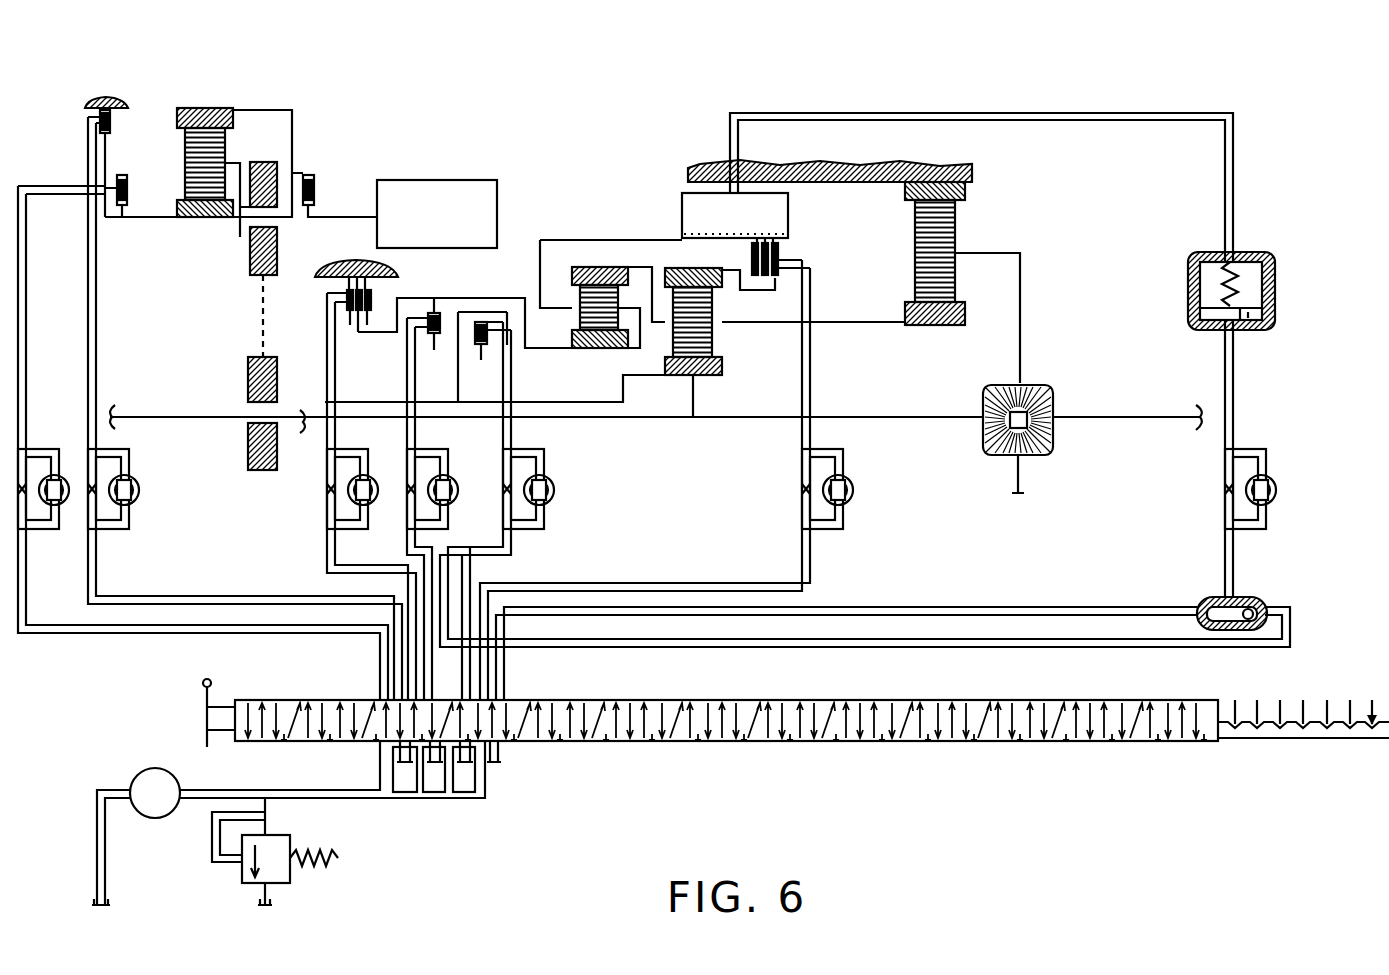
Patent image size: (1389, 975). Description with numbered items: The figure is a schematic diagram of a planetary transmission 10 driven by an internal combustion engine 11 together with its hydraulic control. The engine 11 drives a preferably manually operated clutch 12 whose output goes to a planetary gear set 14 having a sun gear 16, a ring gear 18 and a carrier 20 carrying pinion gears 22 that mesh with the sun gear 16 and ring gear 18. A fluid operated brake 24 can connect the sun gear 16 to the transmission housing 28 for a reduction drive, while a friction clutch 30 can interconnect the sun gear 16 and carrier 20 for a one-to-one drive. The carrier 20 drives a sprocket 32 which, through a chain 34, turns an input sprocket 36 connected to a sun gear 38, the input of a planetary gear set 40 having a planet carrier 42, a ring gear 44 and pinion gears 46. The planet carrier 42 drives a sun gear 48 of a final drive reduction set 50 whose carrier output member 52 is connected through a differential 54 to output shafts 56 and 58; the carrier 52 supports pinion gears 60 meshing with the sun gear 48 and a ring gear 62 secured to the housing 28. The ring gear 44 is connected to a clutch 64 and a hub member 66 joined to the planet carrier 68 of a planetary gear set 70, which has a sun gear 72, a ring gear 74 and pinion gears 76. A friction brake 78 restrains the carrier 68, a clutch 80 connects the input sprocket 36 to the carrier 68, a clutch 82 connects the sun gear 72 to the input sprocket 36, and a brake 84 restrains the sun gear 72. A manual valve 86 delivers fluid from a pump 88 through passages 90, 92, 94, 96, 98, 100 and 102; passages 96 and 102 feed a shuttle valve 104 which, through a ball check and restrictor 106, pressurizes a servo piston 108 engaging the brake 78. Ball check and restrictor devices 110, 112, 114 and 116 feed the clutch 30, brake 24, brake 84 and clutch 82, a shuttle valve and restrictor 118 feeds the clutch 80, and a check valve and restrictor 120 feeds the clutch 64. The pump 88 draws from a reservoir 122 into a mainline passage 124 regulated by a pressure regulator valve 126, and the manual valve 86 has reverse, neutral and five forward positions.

The planetary transmission 10 is at (530, 170).
The internal combustion engine 11 is at (438, 180).
The clutch 12 is at (315, 190).
The planetary gear set 14 is at (243, 97).
The sun gear 16 is at (200, 217).
The ring gear 18 is at (200, 108).
The carrier 20 is at (240, 228).
The pinion gears 22 is at (186, 165).
The brake 24 is at (112, 122).
The transmission housing 28 is at (92, 97).
The friction clutch 30 is at (128, 185).
The sprocket 32 is at (280, 246).
The chain 34 is at (260, 318).
The input sprocket 36 is at (248, 447).
The sun gear 38 is at (708, 390).
The planetary gear set 40 is at (724, 343).
The planet carrier 42 is at (745, 325).
The ring gear 44 is at (682, 270).
The pinion gears 46 is at (700, 377).
The sun gear 48 is at (942, 325).
The final drive reduction set 50 is at (1005, 220).
The carrier output member 52 is at (995, 253).
The differential 54 is at (992, 458).
The output shaft 56 is at (870, 418).
The output shaft 58 is at (1105, 418).
The pinion gears 60 is at (915, 270).
The ring gear 62 is at (965, 198).
The clutch 64 is at (780, 252).
The hub member 66 is at (556, 240).
The planet carrier 68 is at (548, 298).
The planetary gear set 70 is at (603, 262).
The sun gear 72 is at (600, 350).
The ring gear 74 is at (582, 267).
The pinion gears 76 is at (578, 296).
The friction brake 78 is at (690, 205).
The clutch 80 is at (478, 348).
The clutch 82 is at (430, 345).
The brake 84 is at (352, 318).
The manual valve 86 is at (672, 745).
The fluid pump 88 is at (137, 778).
The passage 90 is at (380, 680).
The passage 92 is at (278, 603).
The passage 94 is at (392, 572).
The passage 96 is at (437, 578).
The passage 98 is at (470, 560).
The passage 100 is at (700, 590).
The passage 102 is at (575, 640).
The shuttle valve 104 is at (1210, 600).
The ball check and restrictor 106 is at (1262, 470).
The servo piston 108 is at (1262, 300).
The ball check and restrictor 110 is at (35, 470).
The ball check and restrictor 112 is at (105, 505).
The ball check and restrictor 114 is at (345, 500).
The ball check and restrictor 116 is at (425, 472).
The shuttle valve and restrictor 118 is at (522, 467).
The check valve and restrictor 120 is at (820, 508).
The reservoir 122 is at (92, 903).
The mainline passage 124 is at (325, 800).
The pressure regulator valve 126 is at (278, 877).